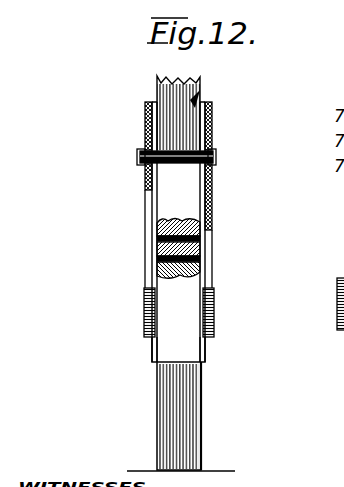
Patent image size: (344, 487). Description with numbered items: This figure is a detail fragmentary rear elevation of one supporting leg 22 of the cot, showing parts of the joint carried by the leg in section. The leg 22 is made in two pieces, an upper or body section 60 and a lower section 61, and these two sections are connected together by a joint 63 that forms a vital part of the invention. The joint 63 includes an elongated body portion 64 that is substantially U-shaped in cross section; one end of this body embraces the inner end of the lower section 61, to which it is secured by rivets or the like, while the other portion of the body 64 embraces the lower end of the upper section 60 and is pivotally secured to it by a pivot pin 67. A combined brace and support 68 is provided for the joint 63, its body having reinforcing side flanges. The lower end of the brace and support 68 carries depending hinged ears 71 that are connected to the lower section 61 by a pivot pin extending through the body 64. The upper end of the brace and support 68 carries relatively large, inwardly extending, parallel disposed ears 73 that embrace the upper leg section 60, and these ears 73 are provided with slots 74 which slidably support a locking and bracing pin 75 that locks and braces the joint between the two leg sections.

The supporting leg 22 is at (203, 96).
The upper or body section 60 is at (198, 79).
The lower section 61 is at (185, 437).
The joint 63 is at (212, 249).
The elongated body portion 64 is at (165, 348).
The pivot pin 67 is at (211, 235).
The combined brace and support 68 is at (143, 225).
The depending hinged ears 71 is at (214, 313).
The inwardly extending parallel disposed ears 73 is at (213, 115).
The slots 74 is at (212, 141).
The locking and bracing pin 75 is at (216, 158).